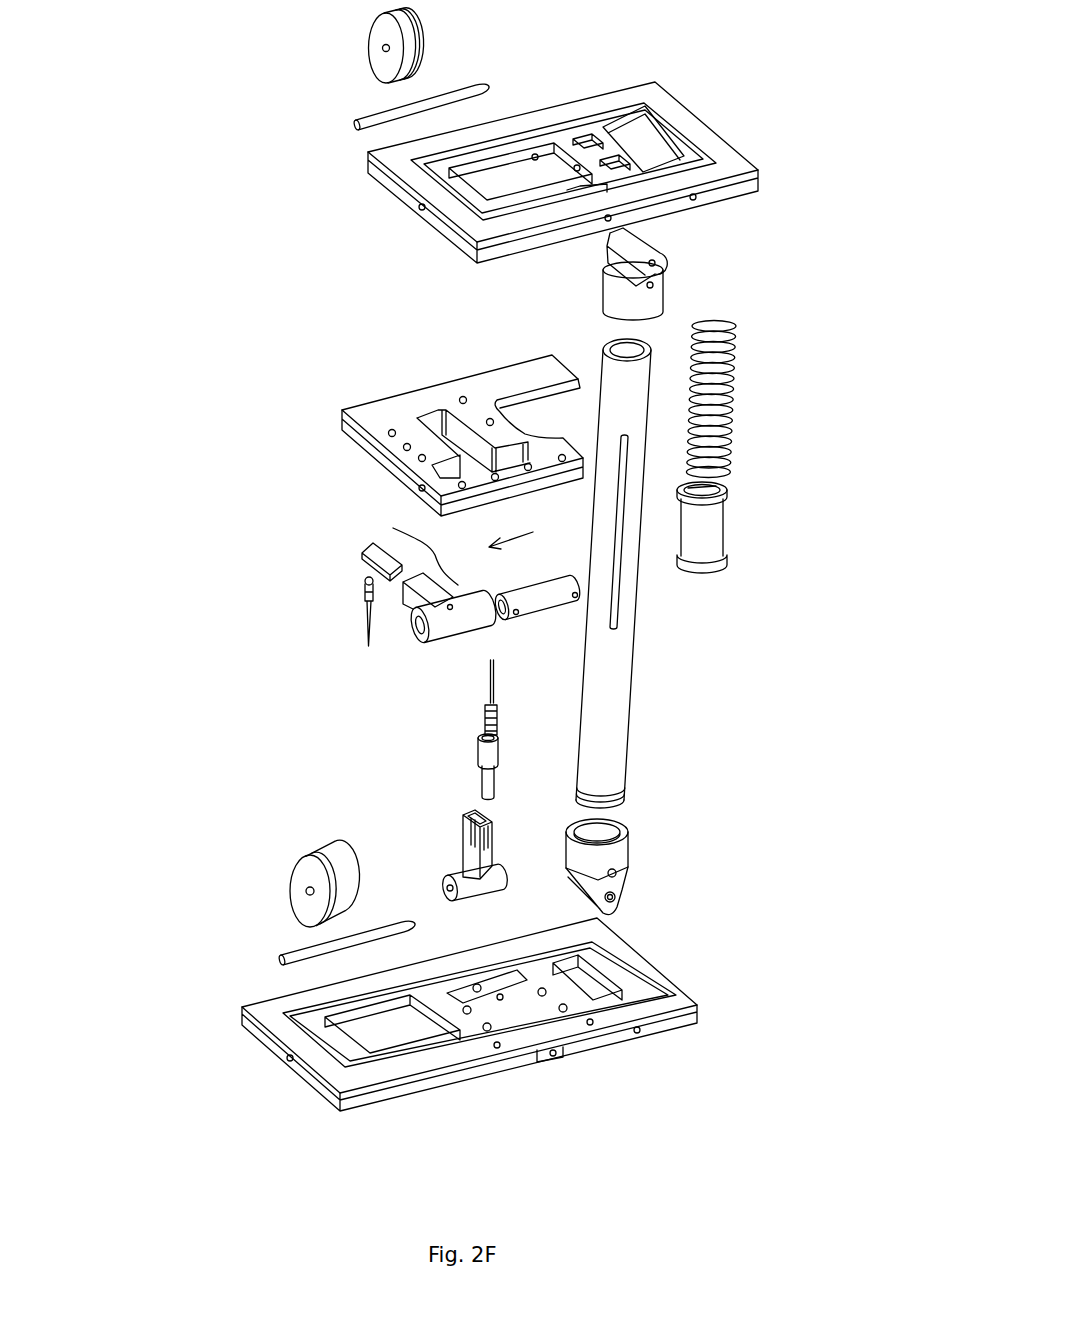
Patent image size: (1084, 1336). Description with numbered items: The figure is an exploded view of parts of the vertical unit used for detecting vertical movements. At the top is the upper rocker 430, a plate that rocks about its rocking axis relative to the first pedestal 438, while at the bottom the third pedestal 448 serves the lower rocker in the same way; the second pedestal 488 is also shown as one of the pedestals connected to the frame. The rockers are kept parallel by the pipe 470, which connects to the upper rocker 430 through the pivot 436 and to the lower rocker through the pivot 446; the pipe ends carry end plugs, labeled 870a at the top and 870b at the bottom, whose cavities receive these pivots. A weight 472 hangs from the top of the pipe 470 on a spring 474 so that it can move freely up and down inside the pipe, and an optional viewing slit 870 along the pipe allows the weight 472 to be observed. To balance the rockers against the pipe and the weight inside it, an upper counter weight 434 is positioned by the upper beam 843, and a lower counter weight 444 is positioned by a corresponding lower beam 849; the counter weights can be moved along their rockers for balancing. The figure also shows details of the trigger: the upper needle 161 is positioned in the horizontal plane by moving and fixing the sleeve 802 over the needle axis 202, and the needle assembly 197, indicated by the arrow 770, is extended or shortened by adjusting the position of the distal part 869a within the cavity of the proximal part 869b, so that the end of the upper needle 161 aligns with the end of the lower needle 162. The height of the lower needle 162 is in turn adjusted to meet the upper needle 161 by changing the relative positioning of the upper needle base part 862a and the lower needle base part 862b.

The upper rocker 430 is at (595, 125).
The upper counter weight 434 is at (371, 58).
The upper beam 843 is at (354, 124).
The pivot 436 is at (665, 262).
The upper cap 870a is at (660, 280).
The viewing slit 870 is at (625, 433).
The pipe 470 is at (617, 722).
The spring 474 is at (740, 410).
The weight 472 is at (715, 532).
The first pedestal 438 is at (380, 452).
The second pedestal 488 is at (430, 393).
The distal part 869a is at (362, 557).
The upper needle 161 is at (365, 617).
The sleeve 802 is at (416, 627).
The proximal part 869b is at (439, 628).
The needle assembly 197 is at (436, 556).
The direction arrow 770 is at (534, 533).
The needle axis 202 is at (577, 594).
The lower needle 162 is at (492, 690).
The lower needle base part 862b is at (478, 815).
The upper needle base part 862a is at (460, 873).
The lower counter weight 444 is at (327, 845).
The rod 849 is at (298, 947).
The lower cap 870b is at (618, 853).
The pivot 446 is at (627, 897).
The third pedestal 448 is at (265, 1035).